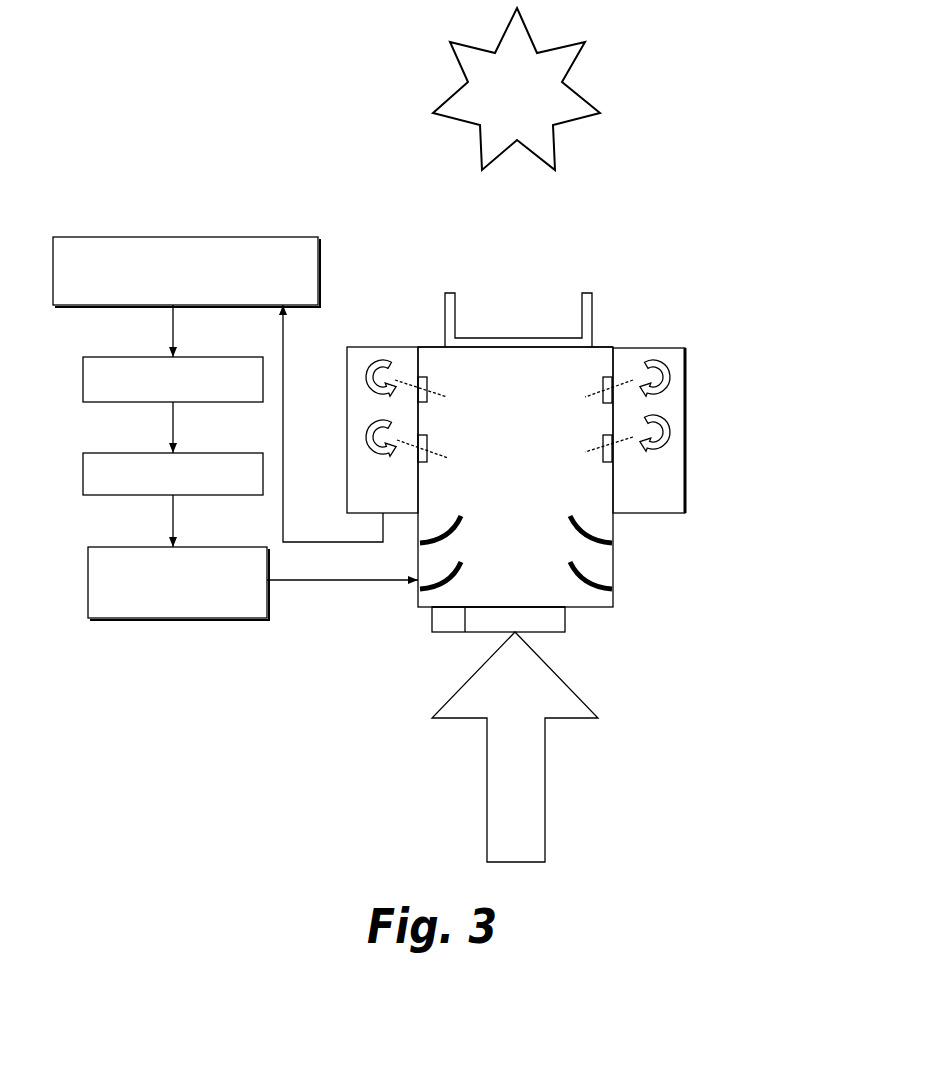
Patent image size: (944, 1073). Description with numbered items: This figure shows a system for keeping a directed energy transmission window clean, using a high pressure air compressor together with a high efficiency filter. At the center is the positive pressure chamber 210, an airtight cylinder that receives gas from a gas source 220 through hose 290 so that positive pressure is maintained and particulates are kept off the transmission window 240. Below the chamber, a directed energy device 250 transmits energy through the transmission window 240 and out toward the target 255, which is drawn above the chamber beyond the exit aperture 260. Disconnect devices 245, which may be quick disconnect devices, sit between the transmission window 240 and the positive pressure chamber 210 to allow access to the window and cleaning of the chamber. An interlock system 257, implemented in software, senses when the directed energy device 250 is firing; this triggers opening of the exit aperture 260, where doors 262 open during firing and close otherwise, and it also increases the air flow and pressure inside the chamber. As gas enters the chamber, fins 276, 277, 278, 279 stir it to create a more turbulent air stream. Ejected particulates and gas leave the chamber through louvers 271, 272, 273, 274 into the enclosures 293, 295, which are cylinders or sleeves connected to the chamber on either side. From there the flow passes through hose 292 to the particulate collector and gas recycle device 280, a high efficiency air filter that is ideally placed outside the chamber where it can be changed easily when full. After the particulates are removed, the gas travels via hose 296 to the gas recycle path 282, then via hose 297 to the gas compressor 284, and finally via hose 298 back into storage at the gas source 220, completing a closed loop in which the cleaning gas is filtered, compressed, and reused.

The target 255 is at (463, 75).
The particulate collector and gas recycle device 280 is at (146, 236).
The hose 296 is at (178, 325).
The gas recycle path 282 is at (82, 374).
The hose 297 is at (178, 422).
The gas compressor 284 is at (82, 471).
The hose 298 is at (178, 517).
The gas source 220 is at (87, 593).
The hose 290 is at (325, 585).
The hose 292 is at (337, 546).
The enclosure 293 is at (370, 345).
The louver 272 is at (415, 377).
The louver 271 is at (415, 452).
The doors 262 is at (600, 300).
The exit aperture 260 is at (540, 337).
The louver 274 is at (613, 380).
The enclosure 295 is at (663, 345).
The louver 273 is at (615, 452).
The fin 276 is at (466, 543).
The fin 277 is at (466, 588).
The fin 278 is at (567, 543).
The fin 279 is at (567, 588).
The positive pressure chamber 210 is at (418, 611).
The interlock system 257 is at (446, 636).
The disconnect devices 245 is at (569, 611).
The transmission window 240 is at (569, 634).
The directed energy device 250 is at (484, 812).